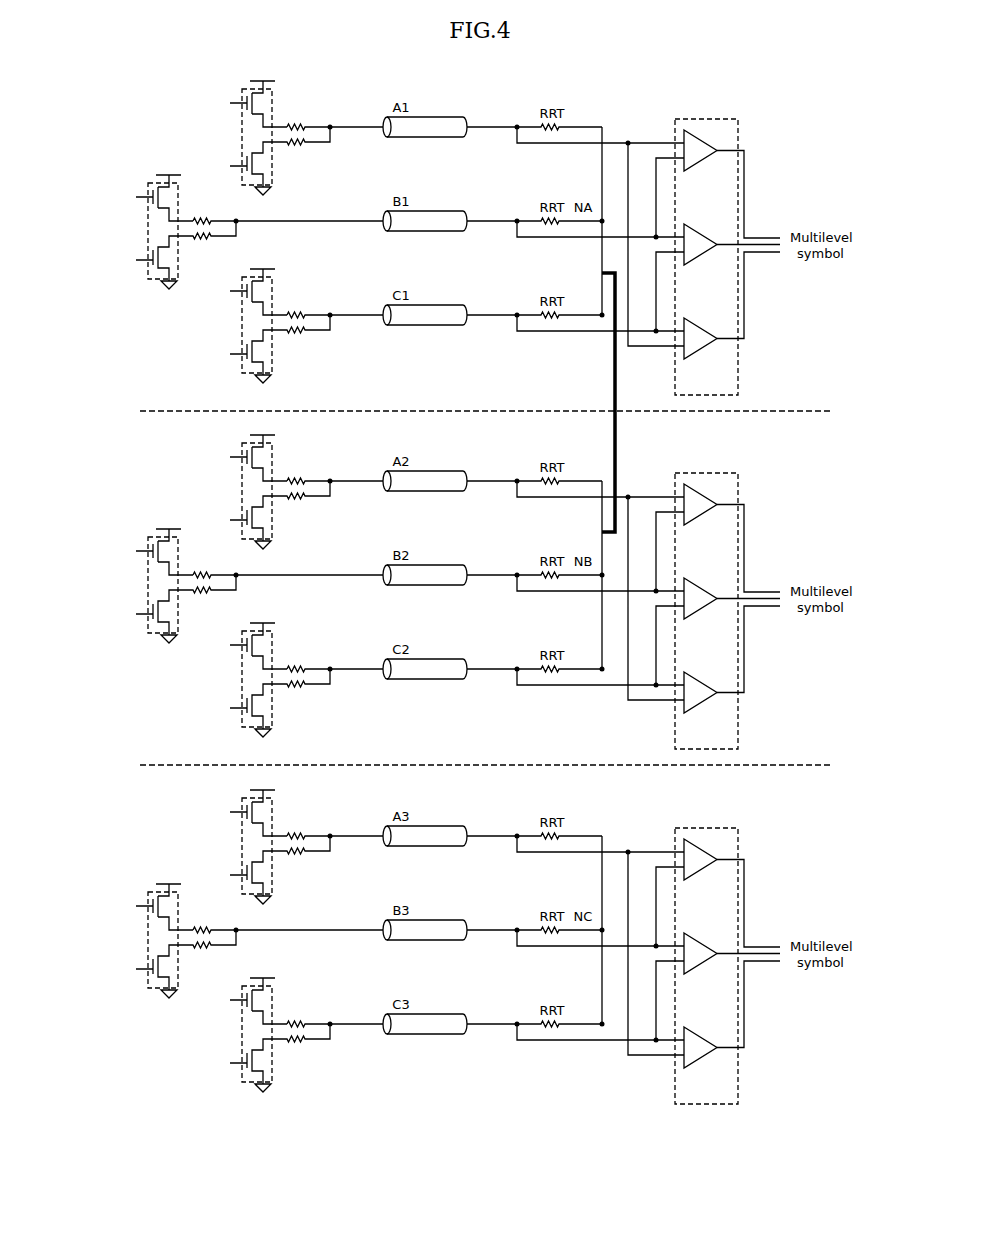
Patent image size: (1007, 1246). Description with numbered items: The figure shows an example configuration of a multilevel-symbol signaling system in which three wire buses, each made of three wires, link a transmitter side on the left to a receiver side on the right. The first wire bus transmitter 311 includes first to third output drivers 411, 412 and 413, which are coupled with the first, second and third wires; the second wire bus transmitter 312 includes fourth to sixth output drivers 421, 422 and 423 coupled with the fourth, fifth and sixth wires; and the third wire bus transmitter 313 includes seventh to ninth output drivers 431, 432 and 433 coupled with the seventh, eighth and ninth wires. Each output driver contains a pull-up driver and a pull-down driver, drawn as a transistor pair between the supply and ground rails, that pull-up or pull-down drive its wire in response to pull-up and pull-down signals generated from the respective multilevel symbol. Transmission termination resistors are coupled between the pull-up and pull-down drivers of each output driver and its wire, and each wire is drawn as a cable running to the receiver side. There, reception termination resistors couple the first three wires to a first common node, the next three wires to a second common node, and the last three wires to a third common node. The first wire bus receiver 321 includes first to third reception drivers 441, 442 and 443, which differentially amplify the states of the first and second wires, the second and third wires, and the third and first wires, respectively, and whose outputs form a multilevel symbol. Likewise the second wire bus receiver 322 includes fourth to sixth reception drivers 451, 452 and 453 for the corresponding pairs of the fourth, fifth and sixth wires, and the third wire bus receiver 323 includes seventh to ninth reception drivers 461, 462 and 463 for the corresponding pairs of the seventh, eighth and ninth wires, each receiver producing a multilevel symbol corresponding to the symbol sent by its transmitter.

The first wire bus transmitter 311 is at (322, 91).
The second wire bus transmitter 312 is at (229, 589).
The third wire bus transmitter 313 is at (229, 944).
The first wire bus receiver 321 is at (726, 119).
The second wire bus receiver 322 is at (703, 598).
The third wire bus receiver 323 is at (703, 953).
The first output driver 411 is at (272, 104).
The second output driver 412 is at (148, 185).
The third output driver 413 is at (272, 292).
The fourth output driver 421 is at (262, 495).
The fifth output driver 422 is at (169, 589).
The sixth output driver 423 is at (263, 683).
The seventh output driver 431 is at (262, 850).
The eighth output driver 432 is at (169, 944).
The ninth output driver 433 is at (263, 1038).
The first reception driver 441 is at (699, 160).
The second reception driver 442 is at (699, 254).
The third reception driver 443 is at (699, 348).
The fourth reception driver 451 is at (708, 513).
The fifth reception driver 452 is at (708, 607).
The sixth reception driver 453 is at (708, 702).
The seventh reception driver 461 is at (708, 868).
The eighth reception driver 462 is at (708, 962).
The ninth reception driver 463 is at (708, 1057).